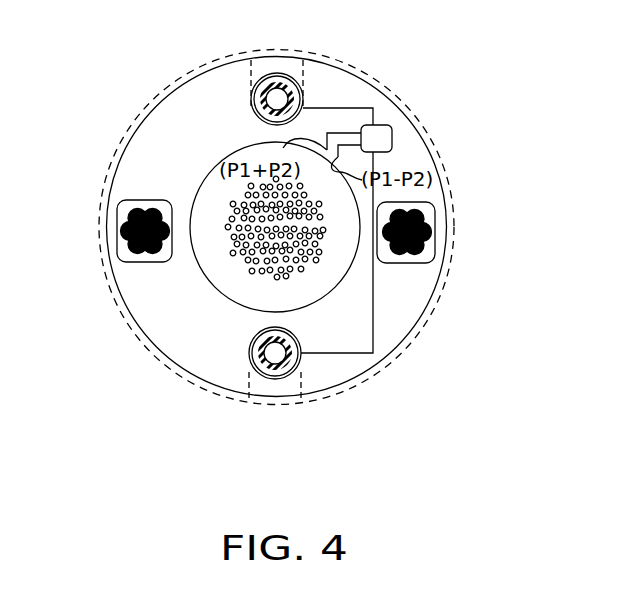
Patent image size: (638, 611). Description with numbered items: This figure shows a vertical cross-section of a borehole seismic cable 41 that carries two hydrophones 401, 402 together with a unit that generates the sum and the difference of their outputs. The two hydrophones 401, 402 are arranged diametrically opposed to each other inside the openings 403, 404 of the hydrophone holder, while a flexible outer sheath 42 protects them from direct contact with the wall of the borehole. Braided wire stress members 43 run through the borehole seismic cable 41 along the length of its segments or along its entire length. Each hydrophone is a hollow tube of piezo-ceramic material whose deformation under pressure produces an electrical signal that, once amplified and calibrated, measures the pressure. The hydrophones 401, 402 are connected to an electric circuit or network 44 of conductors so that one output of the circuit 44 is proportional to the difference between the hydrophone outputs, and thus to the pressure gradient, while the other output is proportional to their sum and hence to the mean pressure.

The borehole seismic cable 41 is at (131, 435).
The flexible outer sheath 42 is at (143, 108).
The stress members 43 is at (171, 190).
The electric circuit or network of conductors 44 is at (393, 139).
The hydrophone 401 is at (254, 110).
The hydrophone 402 is at (290, 337).
The opening of the holder 403 is at (308, 76).
The opening of the holder 404 is at (299, 385).